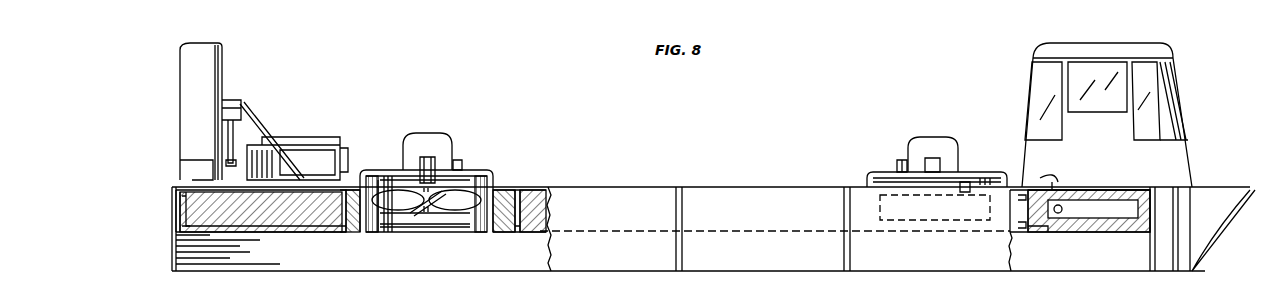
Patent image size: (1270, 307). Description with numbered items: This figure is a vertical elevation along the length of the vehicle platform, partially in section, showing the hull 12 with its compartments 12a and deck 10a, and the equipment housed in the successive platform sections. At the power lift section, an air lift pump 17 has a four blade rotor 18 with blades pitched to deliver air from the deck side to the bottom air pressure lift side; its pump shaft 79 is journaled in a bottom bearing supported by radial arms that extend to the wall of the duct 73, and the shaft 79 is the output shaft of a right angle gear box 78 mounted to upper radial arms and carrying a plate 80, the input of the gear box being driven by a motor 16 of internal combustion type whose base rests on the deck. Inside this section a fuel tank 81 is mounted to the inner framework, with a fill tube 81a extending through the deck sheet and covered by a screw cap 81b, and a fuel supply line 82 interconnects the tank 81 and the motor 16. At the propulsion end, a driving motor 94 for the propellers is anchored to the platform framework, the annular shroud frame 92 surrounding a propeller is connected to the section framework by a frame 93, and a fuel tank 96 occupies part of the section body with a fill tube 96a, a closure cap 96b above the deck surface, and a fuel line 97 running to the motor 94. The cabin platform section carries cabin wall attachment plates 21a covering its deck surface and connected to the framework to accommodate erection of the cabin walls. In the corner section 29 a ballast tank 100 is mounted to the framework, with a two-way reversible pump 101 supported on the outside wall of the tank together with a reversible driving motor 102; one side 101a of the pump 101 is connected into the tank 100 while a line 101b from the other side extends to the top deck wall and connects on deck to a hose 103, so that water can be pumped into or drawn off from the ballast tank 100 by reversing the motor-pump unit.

The hull 12 is at (965, 262).
The hull compartments 12a is at (628, 264).
The deck 10a is at (522, 230).
The motor 16 is at (448, 145).
The air lift pump 17 is at (501, 164).
The four blade rotor 18 is at (466, 208).
The cabin wall attachment plates 21a is at (1144, 185).
The corner section 29 is at (1033, 243).
The duct 73 is at (484, 228).
The right angle gear box 78 is at (462, 166).
The pump shaft 79 is at (398, 200).
The plate 80 is at (392, 220).
The fuel tank 81 is at (878, 226).
The fill tube 81a is at (950, 200).
The screw cap 81b is at (968, 182).
The fuel supply line 82 is at (460, 160).
The annular shroud frame 92 is at (208, 66).
The frame 93 is at (195, 165).
The driving motor 94 is at (325, 148).
The fuel tank 96 is at (306, 230).
The fill tube 96a is at (252, 230).
The closure cap 96b is at (262, 130).
The fuel line 97 is at (300, 150).
The ballast tank 100 is at (1134, 224).
The two-way reversible pump 101 is at (1090, 185).
The side of pump 101a is at (1050, 241).
The line 101b is at (1045, 176).
The reversible driving motor 102 is at (1065, 209).
The hose 103 is at (1059, 172).